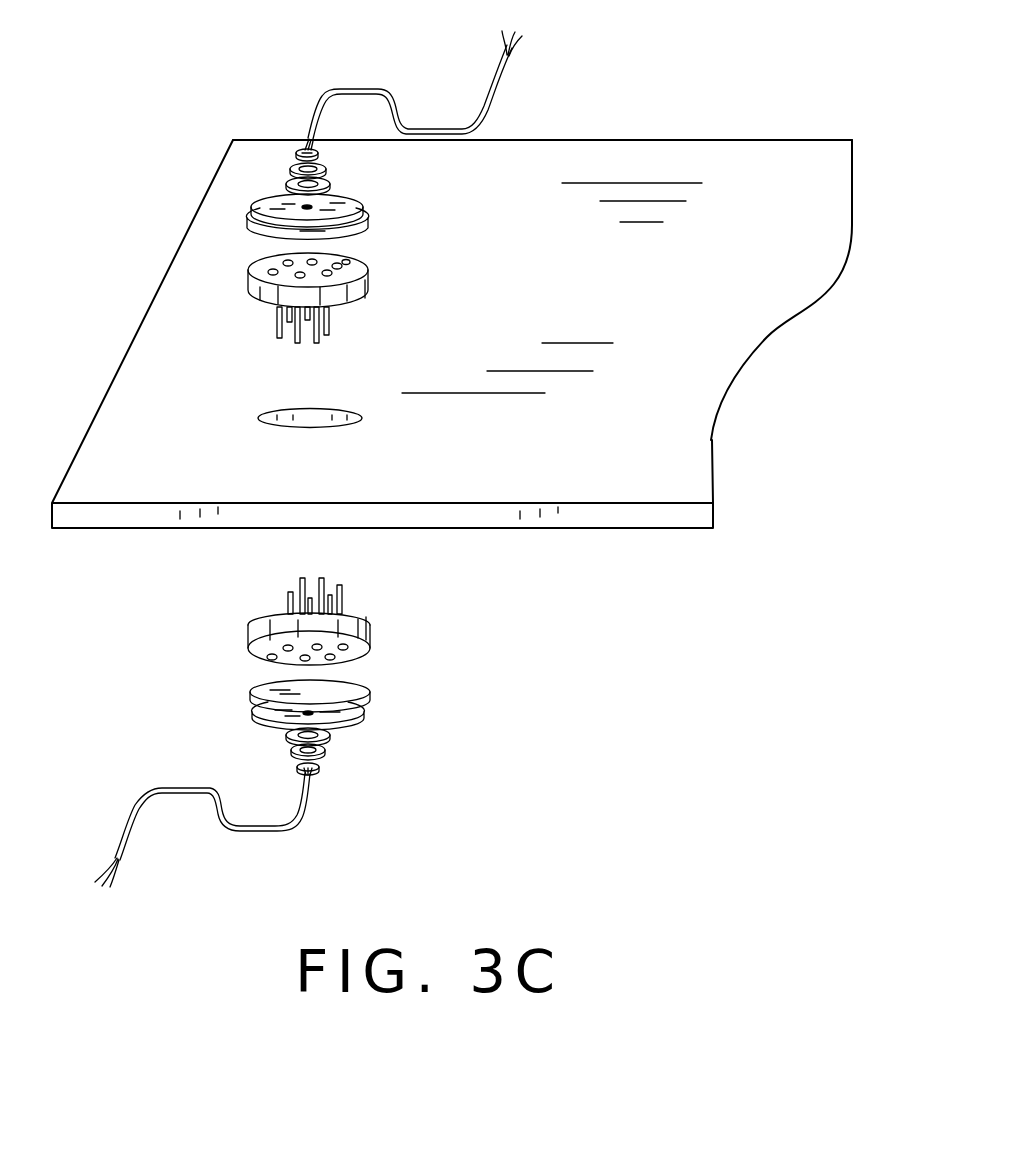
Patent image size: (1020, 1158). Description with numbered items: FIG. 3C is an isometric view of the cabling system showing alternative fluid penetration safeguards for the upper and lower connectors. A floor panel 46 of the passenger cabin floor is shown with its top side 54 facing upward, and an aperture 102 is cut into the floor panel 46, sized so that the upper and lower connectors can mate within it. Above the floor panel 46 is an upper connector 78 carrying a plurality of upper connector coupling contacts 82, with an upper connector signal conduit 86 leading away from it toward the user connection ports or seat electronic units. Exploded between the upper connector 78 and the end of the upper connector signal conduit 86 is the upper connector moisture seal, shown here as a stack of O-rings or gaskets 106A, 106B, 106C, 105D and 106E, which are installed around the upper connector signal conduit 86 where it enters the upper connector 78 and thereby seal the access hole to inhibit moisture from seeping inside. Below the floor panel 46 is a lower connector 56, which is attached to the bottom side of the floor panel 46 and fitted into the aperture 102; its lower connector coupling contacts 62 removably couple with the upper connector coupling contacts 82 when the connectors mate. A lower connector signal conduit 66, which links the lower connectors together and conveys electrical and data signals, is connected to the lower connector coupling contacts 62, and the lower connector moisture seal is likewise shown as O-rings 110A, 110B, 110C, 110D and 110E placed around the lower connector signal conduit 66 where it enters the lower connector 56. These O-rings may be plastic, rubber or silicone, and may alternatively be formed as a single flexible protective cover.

The floor panel 46 is at (750, 445).
The top side 54 is at (703, 363).
The upper connector signal conduit 86 is at (497, 92).
The O-ring 106A is at (320, 154).
The O-ring 106B is at (327, 171).
The O-ring 106C is at (330, 186).
The O-ring 105D is at (363, 211).
The O-ring 106E is at (368, 226).
The upper connector 78 is at (250, 268).
The upper connector coupling contact 82 is at (275, 327).
The aperture 102 is at (328, 415).
The lower connector 56 is at (371, 638).
The lower connector coupling contact 62 is at (288, 597).
The O-ring 110E is at (370, 695).
The O-ring 110D is at (364, 715).
The O-ring 110C is at (330, 737).
The O-ring 110B is at (325, 752).
The O-ring 110A is at (314, 773).
The lower connector signal conduit 66 is at (123, 822).